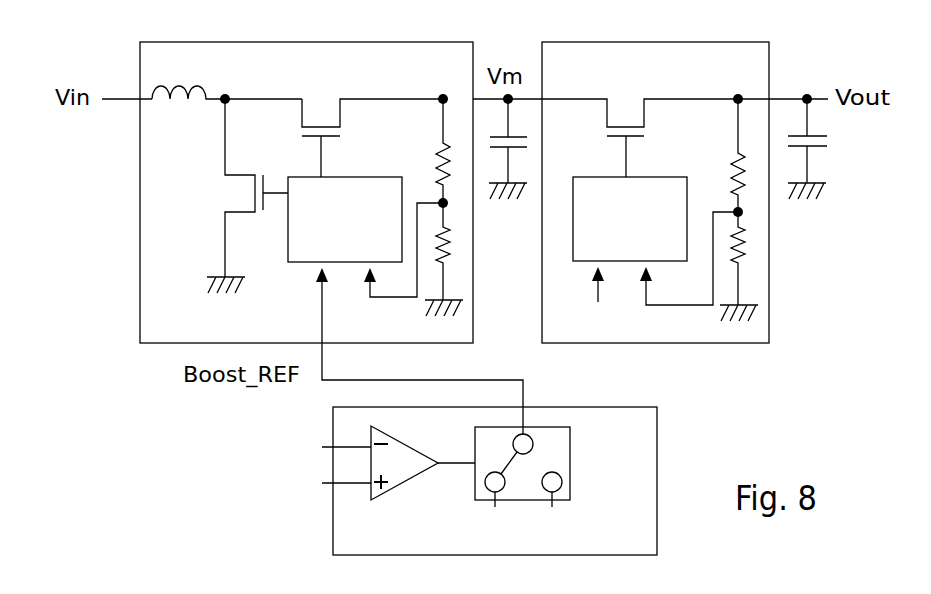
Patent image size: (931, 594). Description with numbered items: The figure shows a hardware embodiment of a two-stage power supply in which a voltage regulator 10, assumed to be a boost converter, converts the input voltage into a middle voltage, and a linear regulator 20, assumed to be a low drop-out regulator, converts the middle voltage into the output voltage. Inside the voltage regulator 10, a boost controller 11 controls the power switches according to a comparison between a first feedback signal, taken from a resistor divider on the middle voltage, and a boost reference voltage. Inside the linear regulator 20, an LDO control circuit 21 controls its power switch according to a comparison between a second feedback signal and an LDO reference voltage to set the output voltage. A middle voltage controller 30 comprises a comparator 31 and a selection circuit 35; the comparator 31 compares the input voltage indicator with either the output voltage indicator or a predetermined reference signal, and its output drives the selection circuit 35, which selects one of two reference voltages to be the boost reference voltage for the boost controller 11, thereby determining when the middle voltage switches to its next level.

The voltage regulator 10 is at (459, 72).
The boost controller 11 is at (334, 254).
The linear regulator 20 is at (761, 75).
The LDO control circuit 21 is at (618, 254).
The middle voltage controller 30 is at (643, 542).
The comparator 31 is at (409, 482).
The selection circuit 35 is at (570, 470).